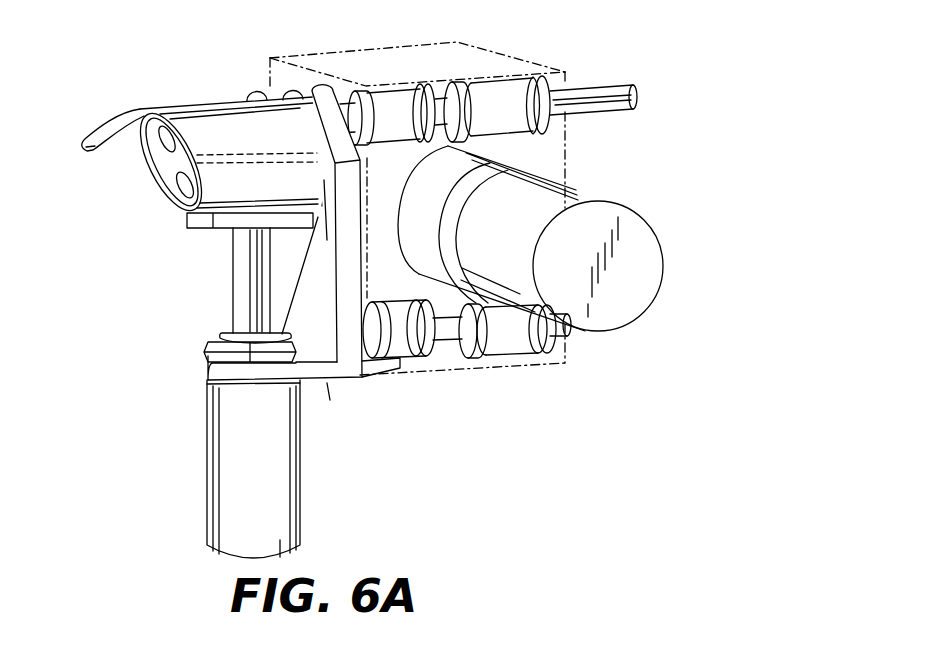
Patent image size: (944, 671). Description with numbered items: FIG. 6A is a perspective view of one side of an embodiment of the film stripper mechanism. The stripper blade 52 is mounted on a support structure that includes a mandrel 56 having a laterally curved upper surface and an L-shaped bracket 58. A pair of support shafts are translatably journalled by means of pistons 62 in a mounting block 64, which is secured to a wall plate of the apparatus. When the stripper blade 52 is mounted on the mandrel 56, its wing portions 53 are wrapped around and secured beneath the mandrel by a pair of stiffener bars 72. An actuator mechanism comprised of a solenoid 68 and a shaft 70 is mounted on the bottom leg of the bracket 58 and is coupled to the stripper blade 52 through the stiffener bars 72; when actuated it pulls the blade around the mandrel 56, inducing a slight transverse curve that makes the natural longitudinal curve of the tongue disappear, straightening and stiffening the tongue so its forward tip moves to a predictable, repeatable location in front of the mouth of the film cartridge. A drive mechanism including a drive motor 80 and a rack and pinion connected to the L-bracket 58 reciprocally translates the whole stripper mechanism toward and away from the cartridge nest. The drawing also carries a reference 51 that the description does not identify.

The tubular applicator body 51 is at (207, 96).
The stripper blade 52 is at (110, 120).
The mandrel 56 is at (163, 153).
The wing portions 53 is at (153, 172).
The stiffener bars 72 is at (187, 219).
The shaft 70 is at (232, 307).
The solenoid 68 is at (207, 462).
The L-shaped bracket 58 is at (328, 378).
The pistons 62 is at (493, 90).
The mounting block 64 is at (526, 40).
The drive motor 80 is at (588, 196).